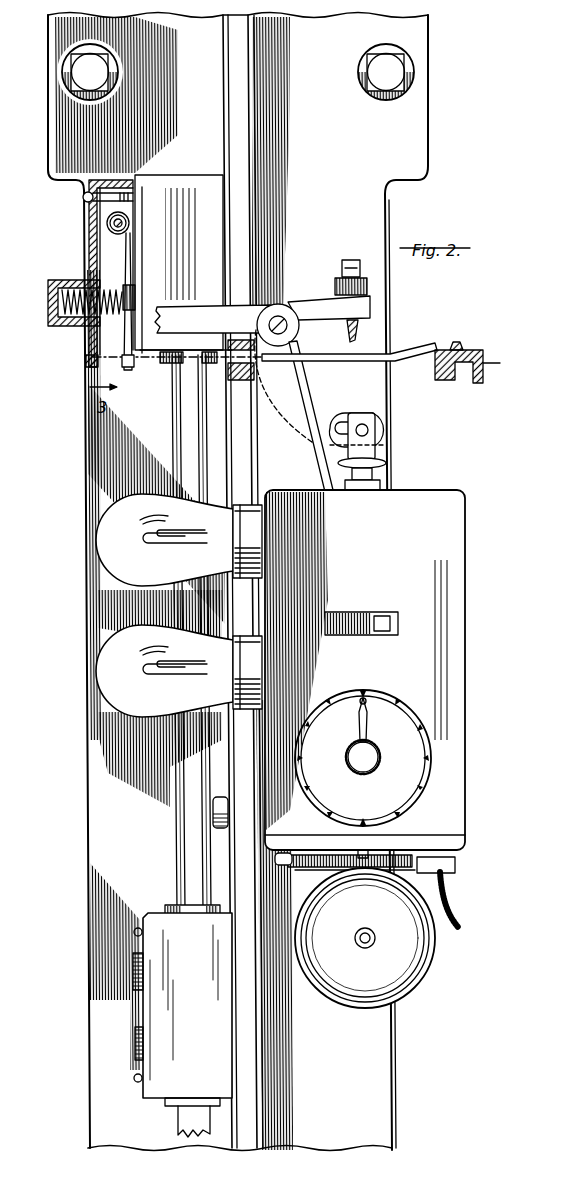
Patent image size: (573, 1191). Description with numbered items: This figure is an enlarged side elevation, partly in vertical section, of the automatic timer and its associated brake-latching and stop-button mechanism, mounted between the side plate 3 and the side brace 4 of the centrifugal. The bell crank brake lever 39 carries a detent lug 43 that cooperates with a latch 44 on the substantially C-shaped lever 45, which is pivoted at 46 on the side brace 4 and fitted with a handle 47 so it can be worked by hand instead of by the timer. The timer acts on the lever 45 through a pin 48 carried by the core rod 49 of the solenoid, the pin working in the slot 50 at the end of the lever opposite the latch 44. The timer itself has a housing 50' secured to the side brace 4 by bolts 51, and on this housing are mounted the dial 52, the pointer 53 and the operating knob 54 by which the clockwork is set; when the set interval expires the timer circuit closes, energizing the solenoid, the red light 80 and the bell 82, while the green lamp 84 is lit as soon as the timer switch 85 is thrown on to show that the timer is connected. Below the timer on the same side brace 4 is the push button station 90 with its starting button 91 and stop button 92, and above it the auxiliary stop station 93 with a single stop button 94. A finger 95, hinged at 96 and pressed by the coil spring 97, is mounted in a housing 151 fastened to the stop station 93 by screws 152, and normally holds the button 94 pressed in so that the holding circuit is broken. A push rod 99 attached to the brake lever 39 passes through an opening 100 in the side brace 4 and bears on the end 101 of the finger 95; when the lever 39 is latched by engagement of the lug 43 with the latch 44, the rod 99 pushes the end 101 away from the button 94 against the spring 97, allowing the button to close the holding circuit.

The left side plate 3 is at (96, 128).
The side brace 4 is at (340, 582).
The bell crank brake lever 39 is at (505, 365).
The detent lug 43 is at (462, 347).
The latch 44 is at (360, 331).
The lever 45 is at (320, 420).
The pivot 46 is at (284, 320).
The handle 47 is at (205, 334).
The pin 48 is at (355, 436).
The core rod 49 is at (376, 471).
The slot 50 is at (382, 436).
The housing 50' is at (365, 670).
The bolt 51 is at (228, 800).
The dial 52 is at (422, 752).
The pointer 53 is at (368, 713).
The operating knob 54 is at (372, 766).
The red light 80 is at (94, 524).
The bell 82 is at (432, 958).
The visual signal 84 is at (94, 673).
The timer switch 85 is at (379, 616).
The push button station 90 is at (183, 1021).
The starting button 91 is at (133, 968).
The stop button 92 is at (135, 1047).
The auxiliary stop station 93 is at (182, 184).
The stop button 94 is at (137, 300).
The finger 95 is at (128, 258).
The hinge 96 is at (127, 223).
The coil spring 97 is at (66, 312).
The push rod 99 is at (396, 358).
The opening 100 is at (255, 375).
The end 101 is at (130, 365).
The housing 151 is at (89, 245).
The screw 152 is at (83, 197).